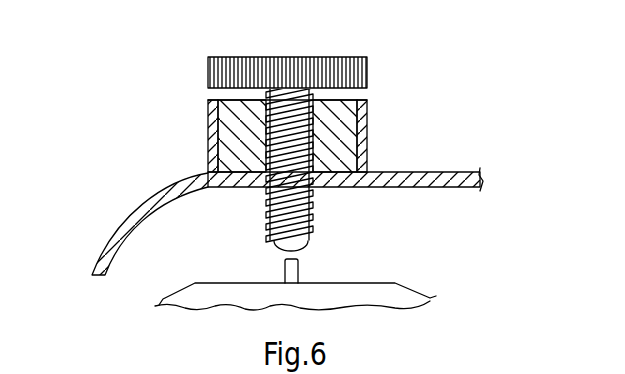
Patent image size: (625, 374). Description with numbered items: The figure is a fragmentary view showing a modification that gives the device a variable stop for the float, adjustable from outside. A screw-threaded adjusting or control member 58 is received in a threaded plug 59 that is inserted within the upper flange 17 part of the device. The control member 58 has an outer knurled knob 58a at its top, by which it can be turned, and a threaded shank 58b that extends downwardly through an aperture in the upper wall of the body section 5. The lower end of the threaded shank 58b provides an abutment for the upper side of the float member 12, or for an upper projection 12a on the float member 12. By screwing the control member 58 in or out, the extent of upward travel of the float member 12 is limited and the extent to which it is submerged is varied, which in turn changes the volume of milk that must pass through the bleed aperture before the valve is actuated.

The body section 5 is at (400, 172).
The float member 12 is at (253, 290).
The upper projection 12a is at (293, 272).
The upper flange 17 is at (368, 136).
The screw-threaded adjusting or control member 58 is at (370, 73).
The outer knurled knob 58a is at (235, 77).
The threaded shank 58b is at (282, 138).
The threaded plug 59 is at (362, 102).